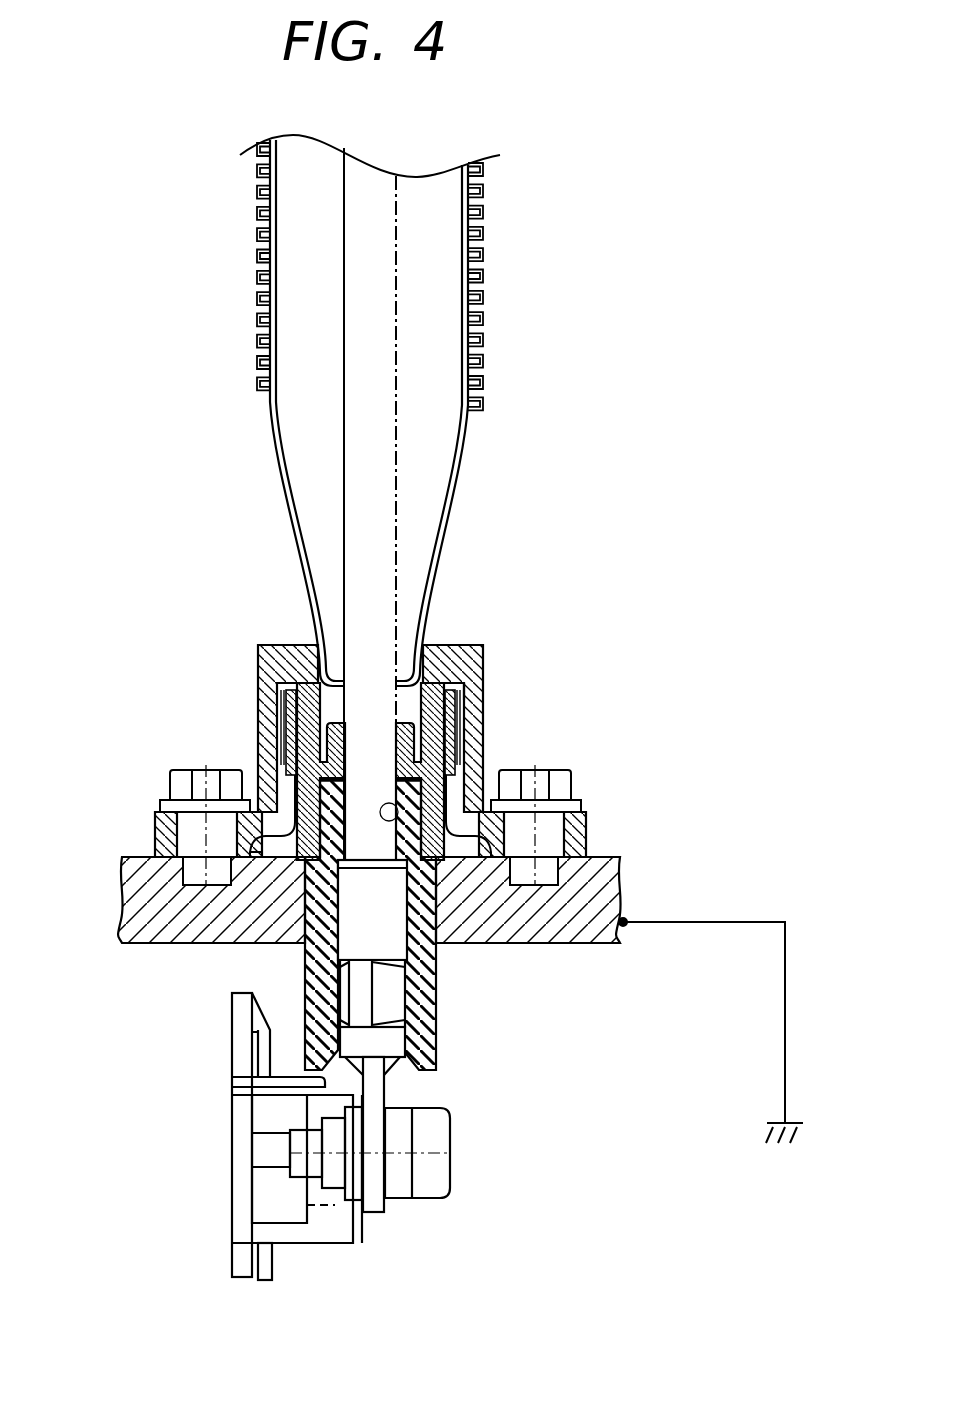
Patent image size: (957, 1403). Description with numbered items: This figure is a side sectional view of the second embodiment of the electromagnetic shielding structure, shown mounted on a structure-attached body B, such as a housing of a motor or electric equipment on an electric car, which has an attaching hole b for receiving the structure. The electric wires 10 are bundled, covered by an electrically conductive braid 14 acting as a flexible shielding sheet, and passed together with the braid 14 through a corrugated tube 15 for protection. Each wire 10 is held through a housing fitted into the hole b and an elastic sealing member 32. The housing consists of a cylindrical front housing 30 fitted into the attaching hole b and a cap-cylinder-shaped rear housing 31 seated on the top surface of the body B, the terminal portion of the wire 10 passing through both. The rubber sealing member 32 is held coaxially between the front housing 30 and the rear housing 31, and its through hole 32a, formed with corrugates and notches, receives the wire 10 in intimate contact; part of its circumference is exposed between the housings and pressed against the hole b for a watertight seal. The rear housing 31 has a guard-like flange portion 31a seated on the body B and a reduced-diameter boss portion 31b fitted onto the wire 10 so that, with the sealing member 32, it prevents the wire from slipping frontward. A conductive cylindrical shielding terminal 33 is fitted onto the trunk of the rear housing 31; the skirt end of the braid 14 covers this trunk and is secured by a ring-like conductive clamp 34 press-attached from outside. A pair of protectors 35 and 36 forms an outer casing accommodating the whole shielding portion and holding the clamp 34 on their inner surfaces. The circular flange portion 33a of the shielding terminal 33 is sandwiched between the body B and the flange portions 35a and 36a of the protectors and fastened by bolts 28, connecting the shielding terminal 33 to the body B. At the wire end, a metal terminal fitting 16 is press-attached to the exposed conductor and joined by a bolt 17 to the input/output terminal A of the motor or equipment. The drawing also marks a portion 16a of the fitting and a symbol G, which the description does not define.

The electric wires 10 is at (403, 517).
The electrically conductive braid 14 is at (466, 432).
The corrugated tube 15 is at (483, 343).
The metal terminal fitting 16 is at (376, 1212).
The tapered portion of rod end 16a is at (440, 1050).
The bolts 17 is at (445, 1155).
The bolts 28 is at (175, 772).
The front housing 30 is at (398, 998).
The rear housing 31 is at (445, 738).
The flange portion 31a is at (150, 930).
The boss portion 31b is at (470, 692).
The elastic sealing member 32 is at (432, 890).
The through hole 32a is at (447, 787).
The shielding terminal 33 is at (290, 732).
The flange portion 33a is at (162, 848).
The clamp 34 is at (281, 700).
The protector 35 is at (262, 652).
The flange portion 35a is at (170, 802).
The protector 36 is at (485, 648).
The flange portion 36a is at (590, 815).
The input/output terminals A is at (224, 1150).
The structure-attached body B is at (125, 912).
The attaching hole b is at (275, 920).
The ground G is at (727, 1030).